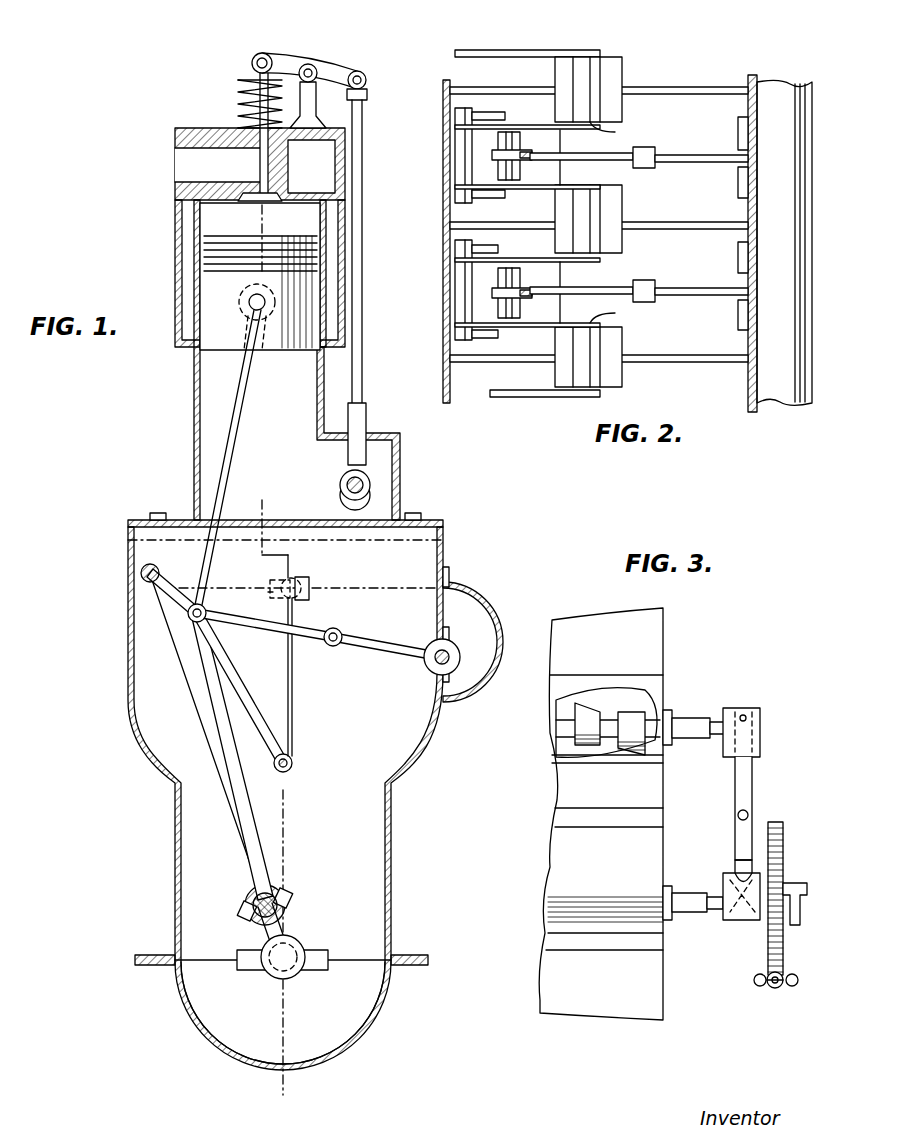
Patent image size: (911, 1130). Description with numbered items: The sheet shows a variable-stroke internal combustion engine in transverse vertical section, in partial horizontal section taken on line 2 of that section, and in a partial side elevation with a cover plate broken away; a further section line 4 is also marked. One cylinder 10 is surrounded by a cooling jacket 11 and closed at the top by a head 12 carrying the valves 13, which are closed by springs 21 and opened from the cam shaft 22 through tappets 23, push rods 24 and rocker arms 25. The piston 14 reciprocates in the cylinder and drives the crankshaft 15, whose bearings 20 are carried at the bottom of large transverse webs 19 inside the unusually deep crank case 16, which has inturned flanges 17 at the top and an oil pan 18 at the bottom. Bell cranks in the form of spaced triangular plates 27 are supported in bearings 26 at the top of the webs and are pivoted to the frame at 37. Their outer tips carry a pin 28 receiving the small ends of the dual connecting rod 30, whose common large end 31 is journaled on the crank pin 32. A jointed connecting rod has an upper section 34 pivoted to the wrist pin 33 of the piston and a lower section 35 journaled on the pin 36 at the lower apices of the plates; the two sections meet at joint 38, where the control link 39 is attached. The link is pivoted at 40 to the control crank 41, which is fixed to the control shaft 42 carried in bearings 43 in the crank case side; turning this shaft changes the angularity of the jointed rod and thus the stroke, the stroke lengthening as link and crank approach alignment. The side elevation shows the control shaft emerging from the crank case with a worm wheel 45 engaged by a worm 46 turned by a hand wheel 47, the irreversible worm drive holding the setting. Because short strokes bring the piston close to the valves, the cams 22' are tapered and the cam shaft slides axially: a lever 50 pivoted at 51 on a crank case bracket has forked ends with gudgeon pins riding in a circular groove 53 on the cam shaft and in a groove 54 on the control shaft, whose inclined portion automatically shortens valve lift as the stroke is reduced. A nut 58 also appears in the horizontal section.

In FIG. 1, the section line 2 is at (128, 540).
In FIG. 1, the section line 4 is at (266, 660).
In FIG. 1, the cylinder 10 is at (200, 270).
In FIG. 1, the cooling jacket 11 is at (178, 240).
In FIG. 1, the head 12 is at (200, 135).
In FIG. 1, the valves 13 is at (258, 192).
In FIG. 1, the piston 14 is at (312, 285).
In FIG. 1, the crankshaft 15 is at (300, 948).
In FIG. 1, the crank case 16 is at (160, 775).
In FIG. 2, the crank case 16 is at (443, 155).
In FIG. 3, the crank case 16 is at (555, 805).
In FIG. 1, the inturned flanges 17 is at (155, 513).
In FIG. 1, the oil pan 18 is at (192, 1025).
In FIG. 1, the webs 19 is at (378, 600).
In FIG. 2, the webs 19 is at (706, 94).
In FIG. 1, the bearings 20 is at (240, 953).
In FIG. 1, the springs 21 is at (238, 100).
In FIG. 1, the cam shaft 22 is at (388, 490).
In FIG. 3, the cam shaft 22 is at (704, 712).
In FIG. 3, the cams 22' is at (610, 765).
In FIG. 1, the tappets 23 is at (366, 420).
In FIG. 3, the tappets 23 is at (632, 708).
In FIG. 1, the push rods 24 is at (362, 322).
In FIG. 1, the rocker arms 25 is at (330, 72).
In FIG. 1, the bearings 26 is at (310, 585).
In FIG. 2, the bearings 26 is at (622, 70).
In FIG. 1, the triangular plates 27 is at (284, 686).
In FIG. 2, the triangular plates 27 is at (562, 135).
In FIG. 1, the pin 28 is at (140, 575).
In FIG. 2, the pin 28 is at (456, 200).
In FIG. 1, the dual connecting rod 30 is at (232, 790).
In FIG. 2, the dual connecting rod 30 is at (490, 112).
In FIG. 1, the large end 31 is at (290, 890).
In FIG. 1, the crank pin 32 is at (250, 892).
In FIG. 1, the wrist pin 33 is at (250, 305).
In FIG. 1, the upper section 34 is at (255, 383).
In FIG. 2, the upper section 34 is at (528, 190).
In FIG. 1, the lower section 35 is at (222, 660).
In FIG. 1, the pin 36 is at (293, 763).
In FIG. 1, the pivot 37 is at (292, 577).
In FIG. 2, the pivot 37 is at (613, 221).
In FIG. 1, the pivot 38 is at (190, 620).
In FIG. 2, the pivot 38 is at (500, 305).
In FIG. 1, the control link 39 is at (304, 628).
In FIG. 2, the control link 39 is at (612, 160).
In FIG. 1, the pivot 40 is at (342, 634).
In FIG. 2, the pivot 40 is at (648, 147).
In FIG. 1, the control crank 41 is at (365, 648).
In FIG. 2, the control crank 41 is at (703, 162).
In FIG. 1, the control shaft 42 is at (436, 662).
In FIG. 3, the control shaft 42 is at (700, 912).
In FIG. 1, the bearings 43 is at (452, 645).
In FIG. 2, the bearings 43 is at (740, 245).
In FIG. 3, the worm wheel 45 is at (776, 822).
In FIG. 3, the worm 46 is at (772, 988).
In FIG. 3, the hand wheel 47 is at (754, 982).
In FIG. 3, the lever 50 is at (752, 780).
In FIG. 3, the pivot 51 is at (738, 812).
In FIG. 3, the circular groove 53 is at (760, 723).
In FIG. 3, the groove 54 is at (748, 922).
In FIG. 2, the nut 58 is at (518, 135).